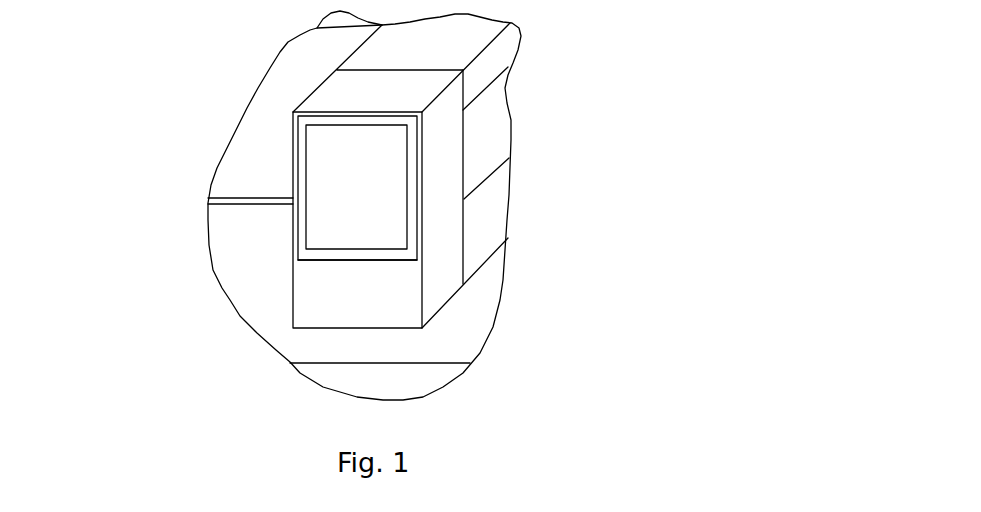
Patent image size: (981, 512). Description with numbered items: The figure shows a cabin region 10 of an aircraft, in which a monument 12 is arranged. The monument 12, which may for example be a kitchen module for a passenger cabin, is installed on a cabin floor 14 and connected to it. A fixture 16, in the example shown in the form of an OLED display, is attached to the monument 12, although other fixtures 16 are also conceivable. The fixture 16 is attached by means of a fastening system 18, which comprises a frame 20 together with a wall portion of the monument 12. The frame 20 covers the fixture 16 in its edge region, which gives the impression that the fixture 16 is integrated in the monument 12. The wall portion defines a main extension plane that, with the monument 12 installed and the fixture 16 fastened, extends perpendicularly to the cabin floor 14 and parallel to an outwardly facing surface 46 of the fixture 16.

The cabin region 10 is at (243, 167).
The monument 12 is at (450, 153).
The cabin floor 14 is at (243, 283).
The fixture 16 is at (317, 237).
The fastening system 18 is at (445, 230).
The frame 20 is at (407, 253).
The outwardly facing surface 46 is at (385, 196).